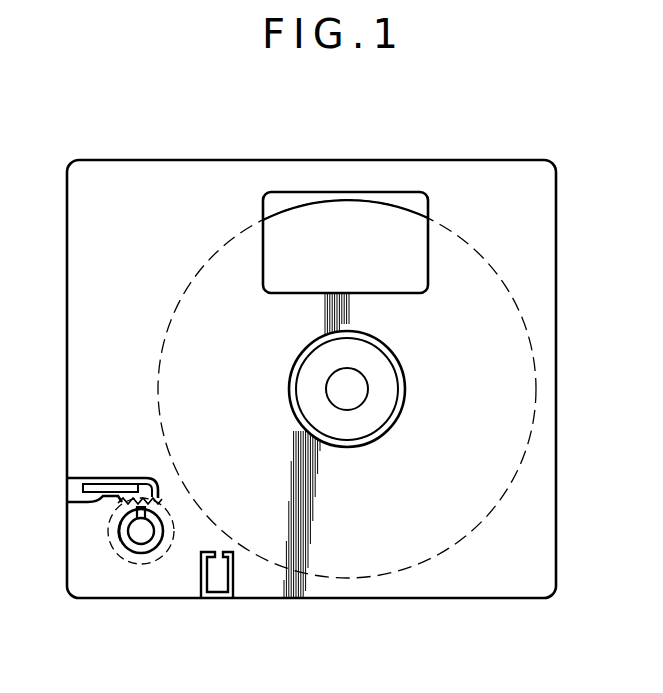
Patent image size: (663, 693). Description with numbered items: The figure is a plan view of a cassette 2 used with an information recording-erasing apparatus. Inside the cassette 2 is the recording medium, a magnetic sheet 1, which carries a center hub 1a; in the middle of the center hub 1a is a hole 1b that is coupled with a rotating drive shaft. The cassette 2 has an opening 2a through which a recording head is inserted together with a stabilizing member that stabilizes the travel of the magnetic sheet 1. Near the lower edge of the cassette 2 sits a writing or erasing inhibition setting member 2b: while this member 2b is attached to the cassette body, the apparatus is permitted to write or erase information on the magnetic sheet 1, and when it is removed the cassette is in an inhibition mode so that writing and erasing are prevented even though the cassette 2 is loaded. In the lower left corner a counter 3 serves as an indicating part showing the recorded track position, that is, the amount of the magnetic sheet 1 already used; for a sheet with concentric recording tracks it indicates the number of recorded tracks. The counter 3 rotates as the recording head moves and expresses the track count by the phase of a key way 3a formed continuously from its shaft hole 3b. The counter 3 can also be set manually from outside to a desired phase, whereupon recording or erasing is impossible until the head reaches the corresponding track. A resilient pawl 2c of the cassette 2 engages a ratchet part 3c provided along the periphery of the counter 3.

The magnetic sheet 1 is at (457, 222).
The center hub 1a is at (388, 376).
The hole 1b is at (363, 388).
The cassette 2 is at (550, 193).
The opening 2a is at (413, 197).
The writing or erasing inhibition setting member 2b is at (221, 583).
The resilient pawl 2c is at (108, 490).
The counter 3 is at (148, 553).
The key way 3a is at (119, 528).
The shaft hole 3b is at (136, 543).
The ratchet part 3c is at (120, 500).